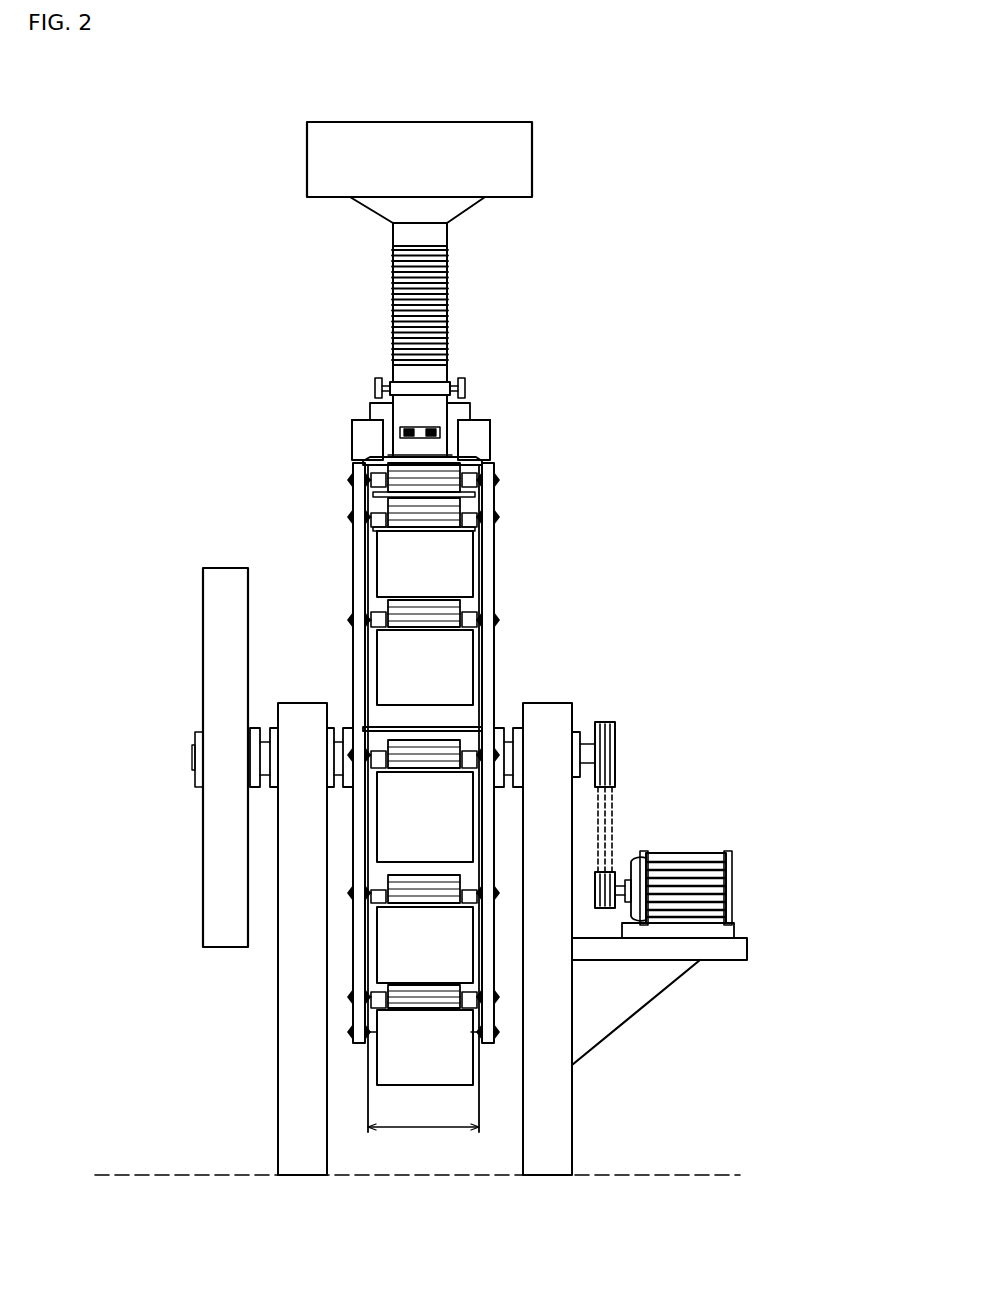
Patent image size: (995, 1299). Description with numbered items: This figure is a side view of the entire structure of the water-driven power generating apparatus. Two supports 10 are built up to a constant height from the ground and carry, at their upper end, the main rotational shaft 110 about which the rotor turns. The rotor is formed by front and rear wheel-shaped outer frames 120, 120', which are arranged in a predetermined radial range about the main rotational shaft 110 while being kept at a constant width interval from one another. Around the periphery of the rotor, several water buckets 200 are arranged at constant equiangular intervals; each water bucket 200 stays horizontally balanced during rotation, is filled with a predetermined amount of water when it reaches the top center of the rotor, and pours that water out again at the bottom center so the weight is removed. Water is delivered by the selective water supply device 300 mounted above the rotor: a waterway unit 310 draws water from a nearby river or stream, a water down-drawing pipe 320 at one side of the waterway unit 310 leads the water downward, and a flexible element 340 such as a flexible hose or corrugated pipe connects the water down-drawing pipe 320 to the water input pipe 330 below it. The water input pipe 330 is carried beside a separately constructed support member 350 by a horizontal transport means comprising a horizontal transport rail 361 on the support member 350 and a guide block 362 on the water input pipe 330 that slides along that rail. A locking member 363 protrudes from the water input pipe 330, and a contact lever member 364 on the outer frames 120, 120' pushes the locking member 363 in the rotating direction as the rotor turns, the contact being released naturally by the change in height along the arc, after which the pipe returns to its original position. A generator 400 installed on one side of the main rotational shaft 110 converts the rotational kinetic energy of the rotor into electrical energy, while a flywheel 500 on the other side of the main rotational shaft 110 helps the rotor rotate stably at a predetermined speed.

The supports 10 is at (296, 1110).
The main rotational shaft 110 is at (500, 706).
The front wheel-shaped outer frame 120 is at (314, 753).
The rear wheel-shaped outer frame 120' is at (535, 753).
The water bucket 200 is at (405, 945).
The selective water supply device 300 is at (585, 256).
The waterway unit 310 is at (405, 128).
The water down-drawing pipe 320 is at (396, 234).
The water input pipe 330 is at (432, 380).
The flexible element 340 is at (394, 300).
The support member 350 is at (380, 404).
The horizontal transport rail 361 is at (378, 394).
The guide block 362 is at (387, 386).
The locking member 363 is at (466, 413).
The contact lever member 364 is at (480, 443).
The generator 400 is at (697, 845).
The flywheel 500 is at (220, 862).